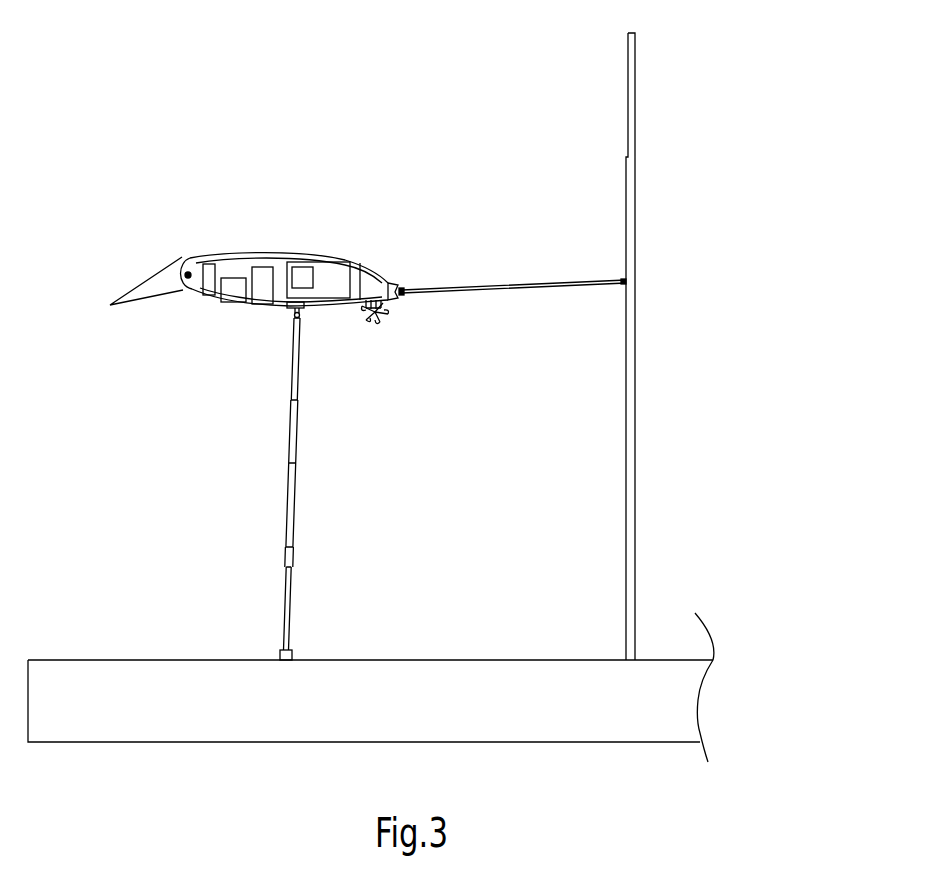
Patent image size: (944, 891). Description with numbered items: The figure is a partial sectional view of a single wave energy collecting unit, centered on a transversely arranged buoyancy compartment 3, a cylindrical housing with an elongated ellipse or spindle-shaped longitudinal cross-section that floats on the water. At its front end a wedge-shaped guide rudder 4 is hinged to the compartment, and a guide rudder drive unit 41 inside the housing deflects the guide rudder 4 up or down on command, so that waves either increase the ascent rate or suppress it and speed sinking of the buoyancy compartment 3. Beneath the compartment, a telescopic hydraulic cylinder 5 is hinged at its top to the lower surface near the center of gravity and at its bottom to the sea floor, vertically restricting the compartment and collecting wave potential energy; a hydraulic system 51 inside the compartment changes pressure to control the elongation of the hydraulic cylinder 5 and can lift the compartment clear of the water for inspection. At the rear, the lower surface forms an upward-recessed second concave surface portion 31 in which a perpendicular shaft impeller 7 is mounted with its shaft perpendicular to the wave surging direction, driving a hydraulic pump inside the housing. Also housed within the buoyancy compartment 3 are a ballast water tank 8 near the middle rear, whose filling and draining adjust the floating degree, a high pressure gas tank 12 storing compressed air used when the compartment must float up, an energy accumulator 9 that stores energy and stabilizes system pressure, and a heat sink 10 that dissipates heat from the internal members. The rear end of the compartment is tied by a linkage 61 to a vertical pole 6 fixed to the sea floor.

The buoyancy compartment 3 is at (260, 250).
The guide rudder 4 is at (135, 272).
The guide rudder drive unit 41 is at (207, 257).
The hydraulic system 51 is at (230, 293).
The energy accumulator 9 is at (263, 295).
The ballast water tank 8 is at (323, 288).
The high pressure gas tank 12 is at (298, 266).
The heat sink 10 is at (287, 305).
The second concave surface portion 31 is at (363, 300).
The perpendicular shaft impeller 7 is at (380, 320).
The hydraulic cylinder 5 is at (287, 483).
The pole 6 is at (633, 357).
The linkage 61 is at (485, 286).